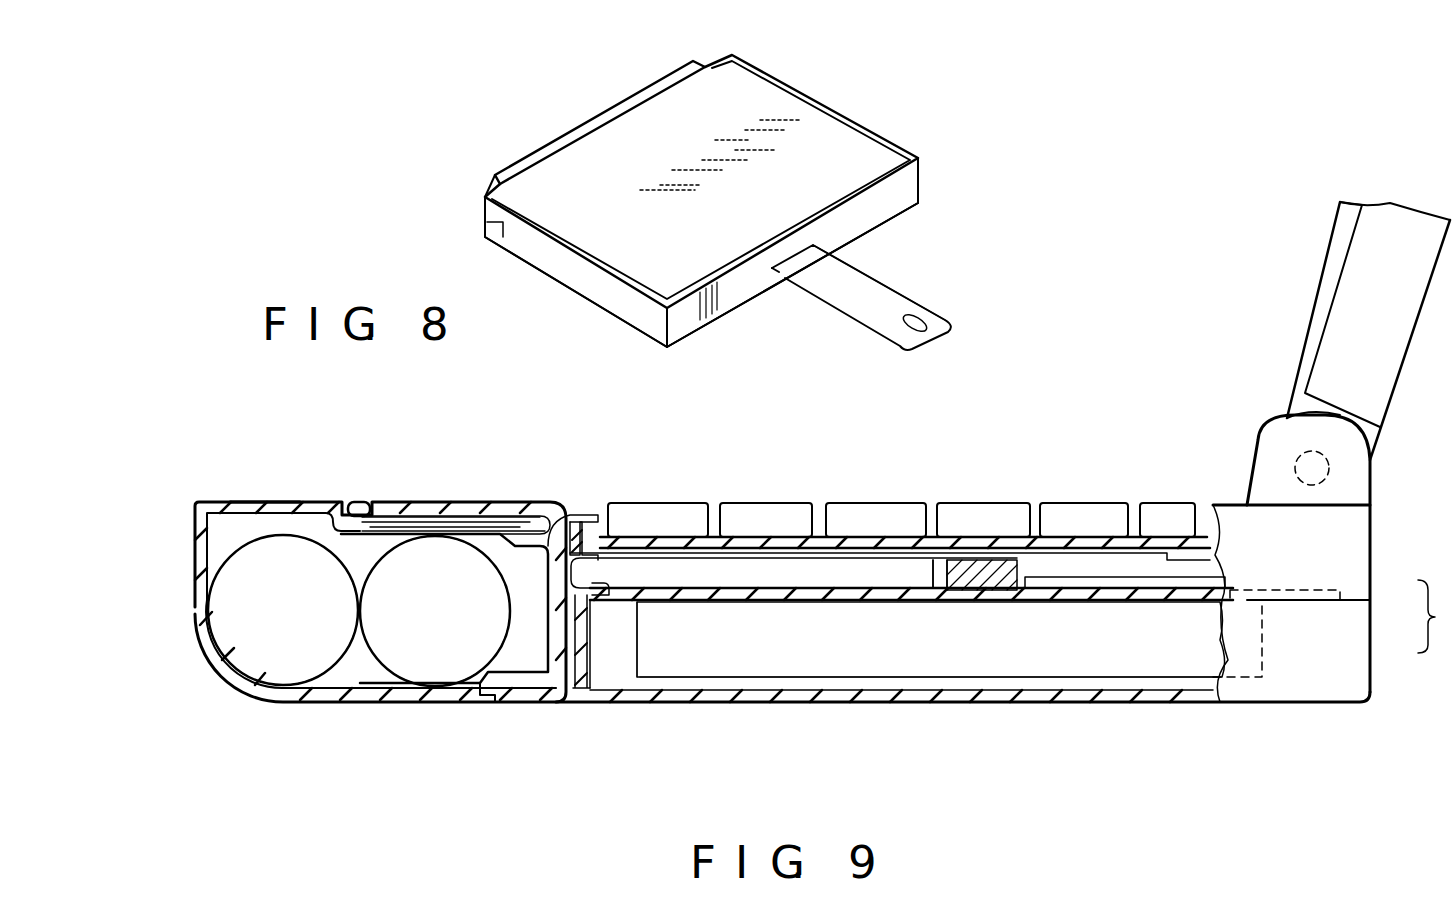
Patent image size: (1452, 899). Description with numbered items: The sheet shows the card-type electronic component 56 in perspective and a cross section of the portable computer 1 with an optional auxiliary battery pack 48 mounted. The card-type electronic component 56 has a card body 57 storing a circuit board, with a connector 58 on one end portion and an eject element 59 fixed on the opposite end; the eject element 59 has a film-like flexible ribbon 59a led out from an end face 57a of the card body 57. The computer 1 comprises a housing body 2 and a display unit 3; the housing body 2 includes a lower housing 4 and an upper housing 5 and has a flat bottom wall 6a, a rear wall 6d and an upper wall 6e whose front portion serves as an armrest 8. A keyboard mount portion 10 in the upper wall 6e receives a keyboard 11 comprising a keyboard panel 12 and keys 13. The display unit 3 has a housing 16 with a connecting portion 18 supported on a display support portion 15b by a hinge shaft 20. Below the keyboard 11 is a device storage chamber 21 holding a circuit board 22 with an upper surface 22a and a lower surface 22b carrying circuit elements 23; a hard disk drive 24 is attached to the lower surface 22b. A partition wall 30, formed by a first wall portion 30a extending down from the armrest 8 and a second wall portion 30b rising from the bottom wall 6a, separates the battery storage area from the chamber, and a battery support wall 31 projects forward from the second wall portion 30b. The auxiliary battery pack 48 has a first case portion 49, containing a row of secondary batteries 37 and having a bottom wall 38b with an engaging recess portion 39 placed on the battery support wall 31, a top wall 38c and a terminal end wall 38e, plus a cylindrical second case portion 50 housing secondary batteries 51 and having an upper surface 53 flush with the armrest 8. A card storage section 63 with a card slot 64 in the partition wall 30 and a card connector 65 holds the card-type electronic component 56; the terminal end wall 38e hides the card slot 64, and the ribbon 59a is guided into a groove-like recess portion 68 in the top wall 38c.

In FIG. 8, the card-type electronic component 56 is at (863, 120).
In FIG. 9, the card-type electronic component 56 is at (845, 572).
In FIG. 8, the connector 58 is at (527, 163).
In FIG. 9, the connector 58 is at (942, 587).
In FIG. 8, the card body 57 is at (593, 247).
In FIG. 9, the card body 57 is at (780, 578).
In FIG. 8, the end face 57a is at (735, 293).
In FIG. 8, the eject element 59 is at (837, 293).
In FIG. 8, the flexible ribbon 59a is at (907, 297).
In FIG. 9, the flexible ribbon 59a is at (548, 512).
In FIG. 9, the portable computer 1 is at (1383, 207).
In FIG. 9, the housing body 2 is at (1435, 616).
In FIG. 9, the display unit 3 is at (1352, 265).
In FIG. 9, the lower housing 4 is at (1358, 637).
In FIG. 9, the upper housing 5 is at (1360, 583).
In FIG. 9, the bottom wall 6a is at (797, 702).
In FIG. 9, the rear wall 6d is at (1370, 553).
In FIG. 9, the upper wall 6e is at (362, 502).
In FIG. 9, the armrest 8 is at (470, 502).
In FIG. 9, the keyboard mount portion 10 is at (600, 530).
In FIG. 9, the keyboard 11 is at (975, 503).
In FIG. 9, the keyboard panel 12 is at (1070, 503).
In FIG. 9, the keys 13 is at (887, 505).
In FIG. 9, the display support portion 15b is at (1362, 490).
In FIG. 9, the housing 16 is at (1338, 318).
In FIG. 9, the connecting portion 18 is at (1292, 410).
In FIG. 9, the hinge shaft 20 is at (1295, 468).
In FIG. 9, the device storage chamber 21 is at (628, 655).
In FIG. 9, the circuit board 22 is at (700, 598).
In FIG. 9, the upper surface 22a is at (683, 600).
In FIG. 9, the lower surface 22b is at (1070, 600).
In FIG. 9, the circuit elements 23 is at (1165, 580).
In FIG. 9, the hard disk drive 24 is at (1097, 672).
In FIG. 9, the partition wall 30 is at (565, 682).
In FIG. 9, the first wall portion 30a is at (572, 515).
In FIG. 9, the second wall portion 30b is at (567, 627).
In FIG. 9, the battery support wall 31 is at (532, 690).
In FIG. 9, the secondary batteries 37 is at (445, 663).
In FIG. 9, the bottom wall 38b is at (370, 700).
In FIG. 9, the top wall 38c is at (353, 527).
In FIG. 9, the terminal end wall 38e is at (507, 570).
In FIG. 9, the engaging recess portion 39 is at (487, 690).
In FIG. 9, the auxiliary battery pack 48 is at (215, 500).
In FIG. 9, the first case portion 49 is at (432, 522).
In FIG. 9, the second case portion 50 is at (283, 697).
In FIG. 9, the secondary batteries 51 is at (228, 635).
In FIG. 9, the upper surface 53 is at (262, 500).
In FIG. 9, the card storage section 63 is at (750, 548).
In FIG. 9, the card slot 64 is at (600, 595).
In FIG. 9, the card connector 65 is at (1000, 580).
In FIG. 9, the recess portion 68 is at (390, 517).